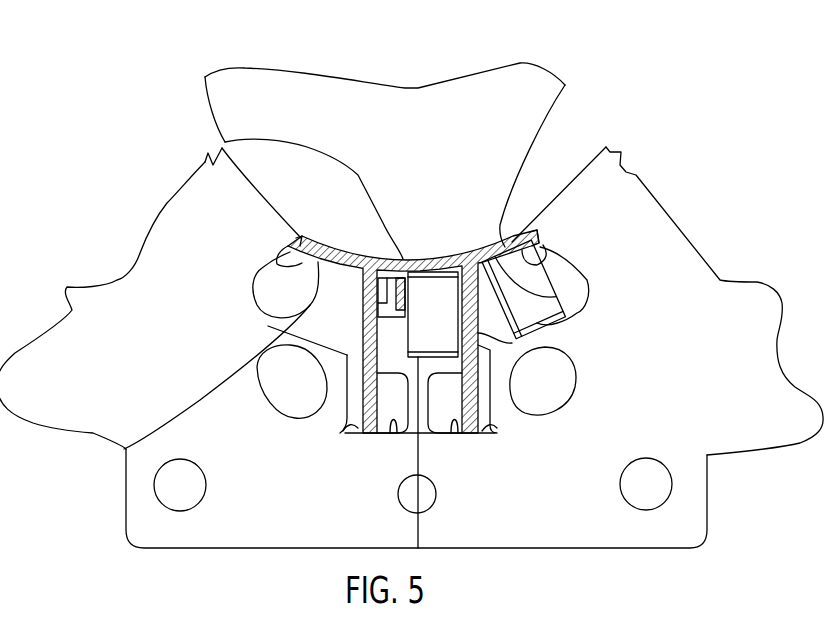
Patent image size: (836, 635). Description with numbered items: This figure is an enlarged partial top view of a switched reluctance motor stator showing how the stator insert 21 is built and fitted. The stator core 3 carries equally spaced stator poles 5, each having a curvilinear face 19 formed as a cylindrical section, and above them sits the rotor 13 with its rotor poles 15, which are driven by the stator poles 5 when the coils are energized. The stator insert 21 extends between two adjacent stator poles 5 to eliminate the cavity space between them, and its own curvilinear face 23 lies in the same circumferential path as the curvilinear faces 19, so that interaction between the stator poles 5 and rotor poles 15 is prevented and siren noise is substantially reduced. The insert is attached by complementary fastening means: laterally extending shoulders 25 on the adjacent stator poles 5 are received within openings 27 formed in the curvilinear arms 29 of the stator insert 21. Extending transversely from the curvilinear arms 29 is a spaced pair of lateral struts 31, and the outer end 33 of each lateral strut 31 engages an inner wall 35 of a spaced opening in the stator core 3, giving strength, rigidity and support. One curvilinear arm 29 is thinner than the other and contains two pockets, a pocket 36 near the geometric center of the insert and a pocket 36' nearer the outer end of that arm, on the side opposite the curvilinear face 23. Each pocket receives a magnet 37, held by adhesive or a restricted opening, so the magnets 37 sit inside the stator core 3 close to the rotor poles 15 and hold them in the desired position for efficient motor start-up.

The stator core 3 is at (679, 232).
The stator pole 5 is at (624, 172).
The rotor 13 is at (456, 62).
The rotor pole 15 is at (407, 142).
The curvilinear face 19 is at (276, 213).
The stator insert 21 is at (123, 446).
The curvilinear face 23 is at (363, 257).
The shoulder 25 is at (298, 240).
The opening 27 is at (290, 263).
The curvilinear arm 29 is at (338, 306).
The lateral strut 31 is at (348, 388).
The outer end 33 is at (386, 434).
The inner wall 35 is at (350, 428).
The pocket 36 is at (418, 267).
The pocket 36' is at (573, 289).
The magnet 37 is at (540, 302).